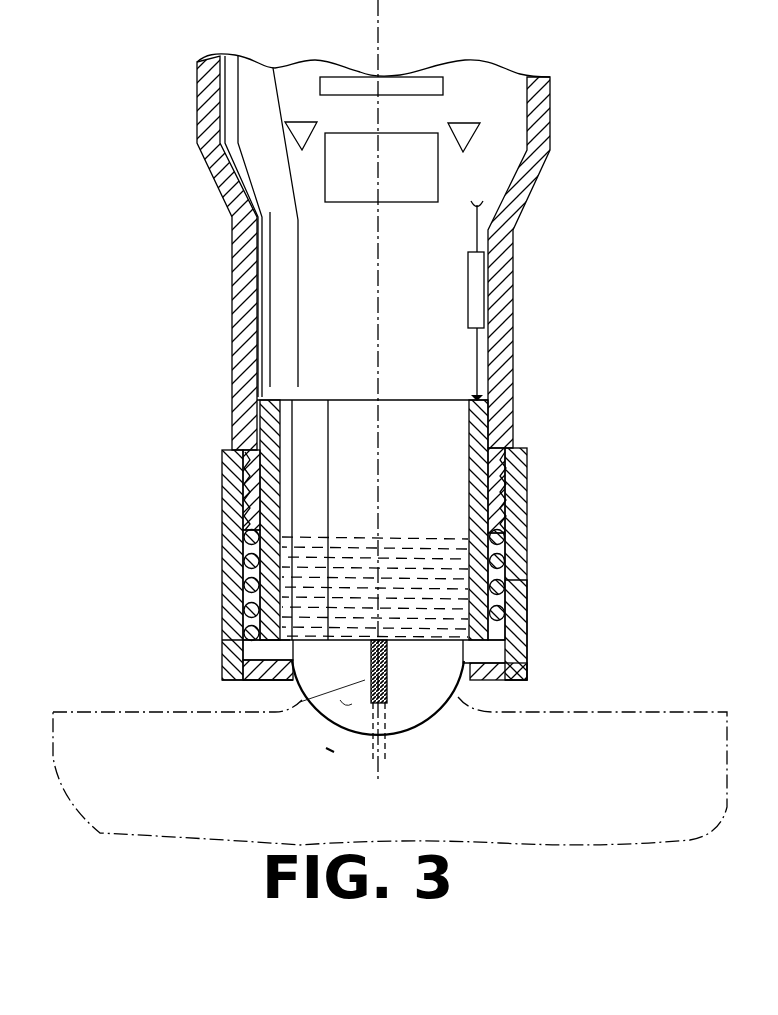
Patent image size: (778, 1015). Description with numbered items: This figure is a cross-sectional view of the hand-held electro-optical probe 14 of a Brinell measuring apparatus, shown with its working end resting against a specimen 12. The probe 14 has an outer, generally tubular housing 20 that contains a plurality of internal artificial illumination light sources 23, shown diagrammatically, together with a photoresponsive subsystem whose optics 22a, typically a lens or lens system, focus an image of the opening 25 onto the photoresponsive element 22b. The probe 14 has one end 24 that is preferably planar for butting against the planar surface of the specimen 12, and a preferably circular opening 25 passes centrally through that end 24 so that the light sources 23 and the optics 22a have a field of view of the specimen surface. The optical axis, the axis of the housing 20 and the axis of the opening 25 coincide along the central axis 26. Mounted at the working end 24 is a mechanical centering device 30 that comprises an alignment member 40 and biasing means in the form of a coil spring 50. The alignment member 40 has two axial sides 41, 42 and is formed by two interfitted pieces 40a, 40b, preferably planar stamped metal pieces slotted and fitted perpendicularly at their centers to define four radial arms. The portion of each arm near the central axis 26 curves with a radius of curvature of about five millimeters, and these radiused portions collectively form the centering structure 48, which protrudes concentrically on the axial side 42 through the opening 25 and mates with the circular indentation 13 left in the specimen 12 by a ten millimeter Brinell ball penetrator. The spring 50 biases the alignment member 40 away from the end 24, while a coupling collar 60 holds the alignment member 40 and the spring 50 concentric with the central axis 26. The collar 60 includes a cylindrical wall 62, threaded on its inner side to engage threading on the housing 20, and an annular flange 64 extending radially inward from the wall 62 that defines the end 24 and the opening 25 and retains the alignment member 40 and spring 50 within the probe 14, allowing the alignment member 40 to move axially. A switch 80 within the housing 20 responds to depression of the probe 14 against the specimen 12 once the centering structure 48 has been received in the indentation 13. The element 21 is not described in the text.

The specimen 12 is at (625, 710).
The circular indentation 13 is at (427, 748).
The probe 14 is at (522, 238).
The outer tubular housing 20 is at (205, 62).
The left threaded sleeve 21 is at (247, 470).
The optics 22a is at (408, 133).
The photoresponsive element 22b is at (322, 77).
The illumination light sources 23 is at (302, 122).
The end of the probe 24 is at (522, 680).
The opening 25 is at (285, 637).
The central axis 26 is at (376, 46).
The centering device 30 is at (527, 468).
The alignment member 40 is at (472, 692).
The interfitted piece 40a is at (335, 722).
The interfitted piece 40b is at (386, 556).
The axial side 41 is at (300, 640).
The axial side 42 is at (290, 688).
The centering structure 48 is at (328, 752).
The biasing spring 50 is at (505, 555).
The coupling collar 60 is at (532, 596).
The cylindrical wall 62 is at (232, 537).
The annular flange 64 is at (240, 680).
The switch 80 is at (468, 312).